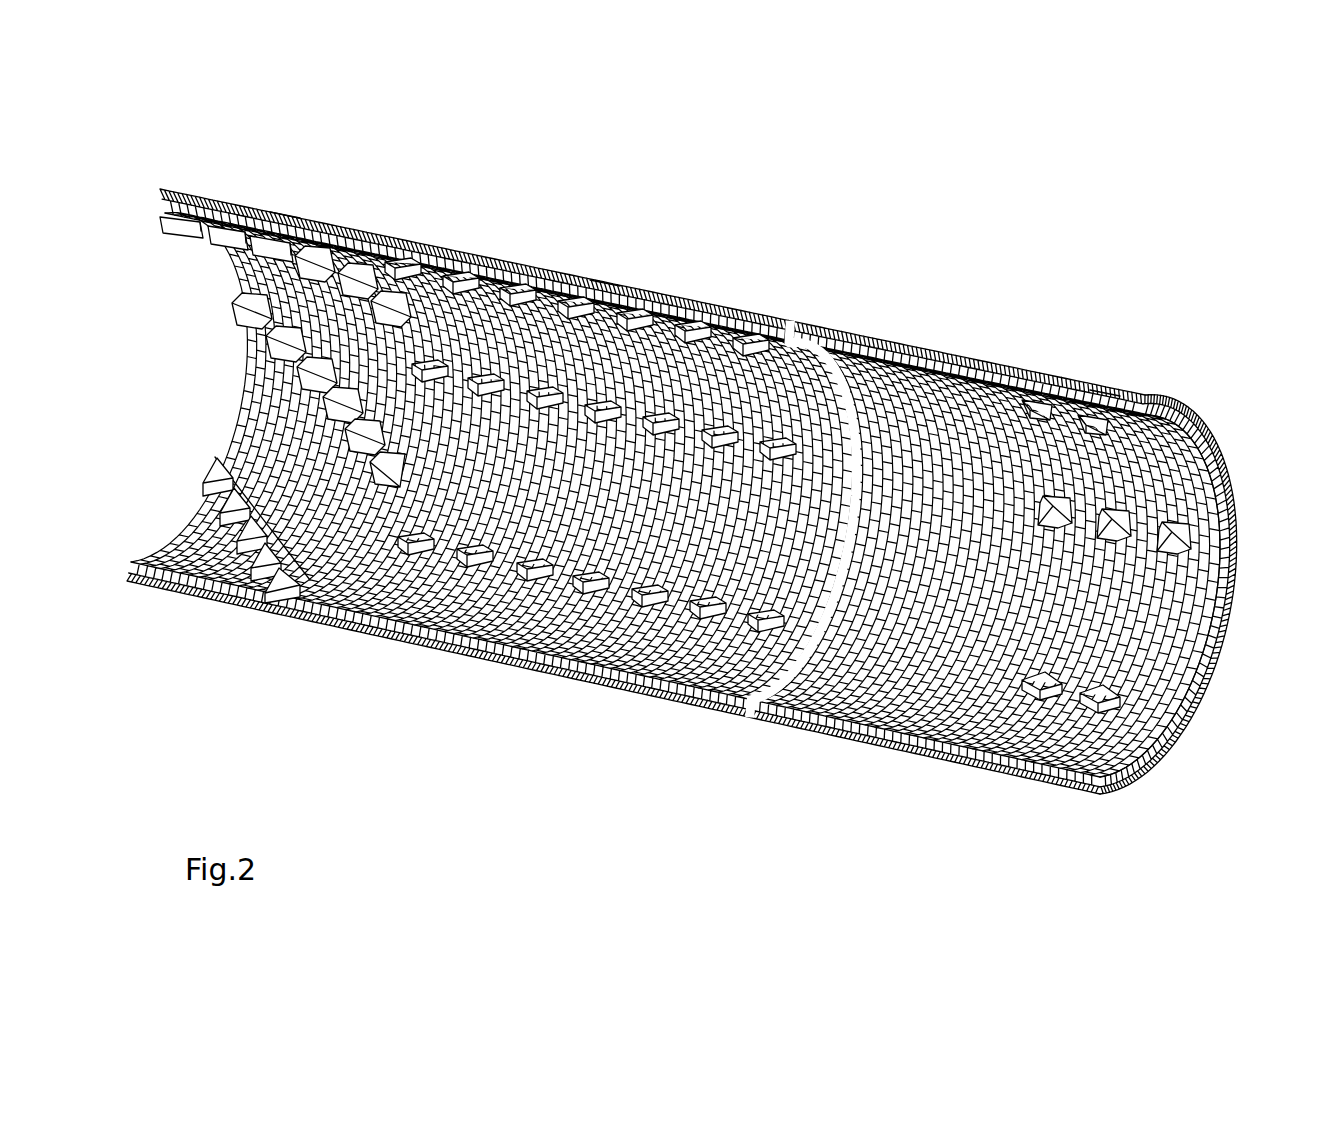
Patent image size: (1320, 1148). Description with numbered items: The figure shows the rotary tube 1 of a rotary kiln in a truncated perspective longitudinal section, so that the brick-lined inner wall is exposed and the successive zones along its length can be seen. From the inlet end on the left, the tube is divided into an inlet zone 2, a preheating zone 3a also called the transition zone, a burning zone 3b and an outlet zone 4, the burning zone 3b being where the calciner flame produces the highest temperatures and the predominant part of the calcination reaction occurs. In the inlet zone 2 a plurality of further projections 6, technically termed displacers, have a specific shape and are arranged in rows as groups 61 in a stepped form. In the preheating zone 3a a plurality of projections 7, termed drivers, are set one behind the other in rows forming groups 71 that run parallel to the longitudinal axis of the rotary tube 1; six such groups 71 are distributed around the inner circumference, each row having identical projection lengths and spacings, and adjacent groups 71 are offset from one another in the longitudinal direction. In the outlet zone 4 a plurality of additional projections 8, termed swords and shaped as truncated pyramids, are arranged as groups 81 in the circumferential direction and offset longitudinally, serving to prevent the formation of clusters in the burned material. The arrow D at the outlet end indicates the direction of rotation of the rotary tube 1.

The rotary tube 1 is at (892, 252).
The inlet zone 2 is at (122, 628).
The preheating zone 3a is at (703, 757).
The burning zone 3b is at (920, 806).
The outlet zone 4 is at (1093, 841).
The further projections 6 is at (312, 265).
The groups of further projections 61 is at (286, 197).
The projections 7 is at (610, 408).
The groups of projections 71 is at (603, 268).
The additional projections 8 is at (1037, 402).
The groups of additional projections 81 is at (1104, 374).
The direction of rotation D is at (1210, 733).